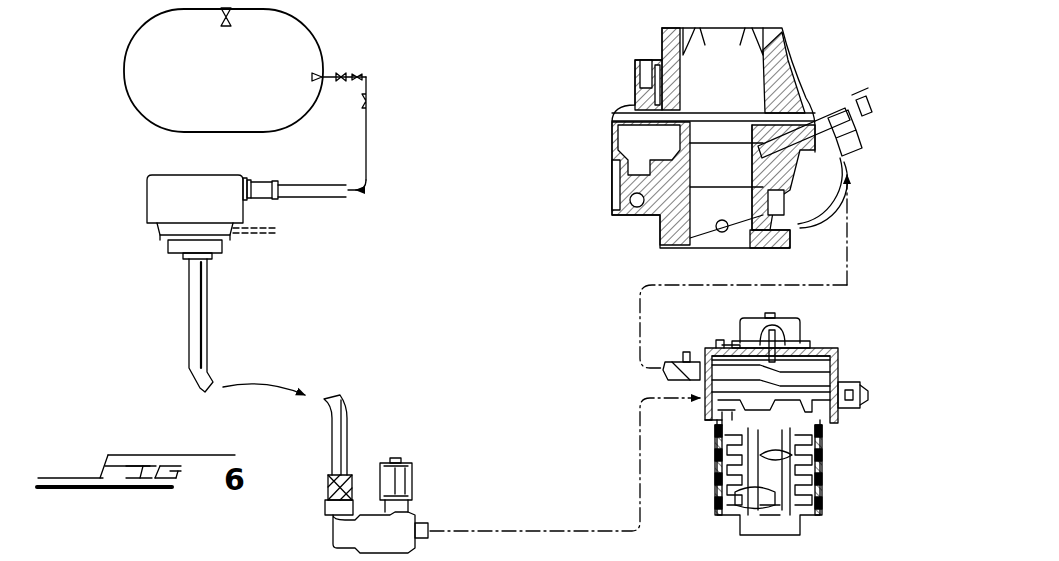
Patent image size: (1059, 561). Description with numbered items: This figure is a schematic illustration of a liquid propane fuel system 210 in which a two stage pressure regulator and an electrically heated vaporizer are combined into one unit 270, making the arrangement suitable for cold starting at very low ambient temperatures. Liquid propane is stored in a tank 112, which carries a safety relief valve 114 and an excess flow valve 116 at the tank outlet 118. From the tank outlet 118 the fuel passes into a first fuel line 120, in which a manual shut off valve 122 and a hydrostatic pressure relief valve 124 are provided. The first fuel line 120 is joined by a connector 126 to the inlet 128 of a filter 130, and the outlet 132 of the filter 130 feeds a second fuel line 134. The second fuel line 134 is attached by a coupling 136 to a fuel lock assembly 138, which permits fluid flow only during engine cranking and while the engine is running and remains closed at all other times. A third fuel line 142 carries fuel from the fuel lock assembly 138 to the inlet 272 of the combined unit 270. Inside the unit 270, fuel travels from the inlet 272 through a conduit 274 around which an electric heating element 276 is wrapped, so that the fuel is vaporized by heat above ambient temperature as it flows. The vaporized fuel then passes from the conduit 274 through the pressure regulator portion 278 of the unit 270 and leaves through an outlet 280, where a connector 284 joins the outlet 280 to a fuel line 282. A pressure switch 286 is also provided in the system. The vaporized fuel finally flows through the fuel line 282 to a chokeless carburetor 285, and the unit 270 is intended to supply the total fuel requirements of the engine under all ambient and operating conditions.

The tank 112 is at (303, 31).
The safety relief valve 114 is at (226, 28).
The excess flow valve 116 is at (311, 78).
The tank outlet 118 is at (323, 71).
The first fuel line 120 is at (323, 193).
The manual shut off valve 122 is at (354, 75).
The hydrostatic pressure relief valve 124 is at (368, 107).
The connector 126 is at (263, 185).
The inlet 128 is at (245, 178).
The filter 130 is at (206, 205).
The outlet 132 is at (218, 246).
The second fuel line 134 is at (210, 369).
The coupling 136 is at (327, 513).
The fuel lock assembly 138 is at (390, 541).
The third fuel line 142 is at (443, 528).
The system 210 is at (473, 122).
The unit 270 is at (829, 492).
The inlet 272 is at (708, 400).
The conduit 274 is at (792, 457).
The electric heating element 276 is at (733, 502).
The pressure regulator portion 278 is at (842, 348).
The outlet 280 is at (705, 347).
The fuel line 282 is at (632, 311).
The connector 284 is at (682, 356).
The chokeless carburetor 285 is at (813, 88).
The pressure switch 286 is at (850, 413).